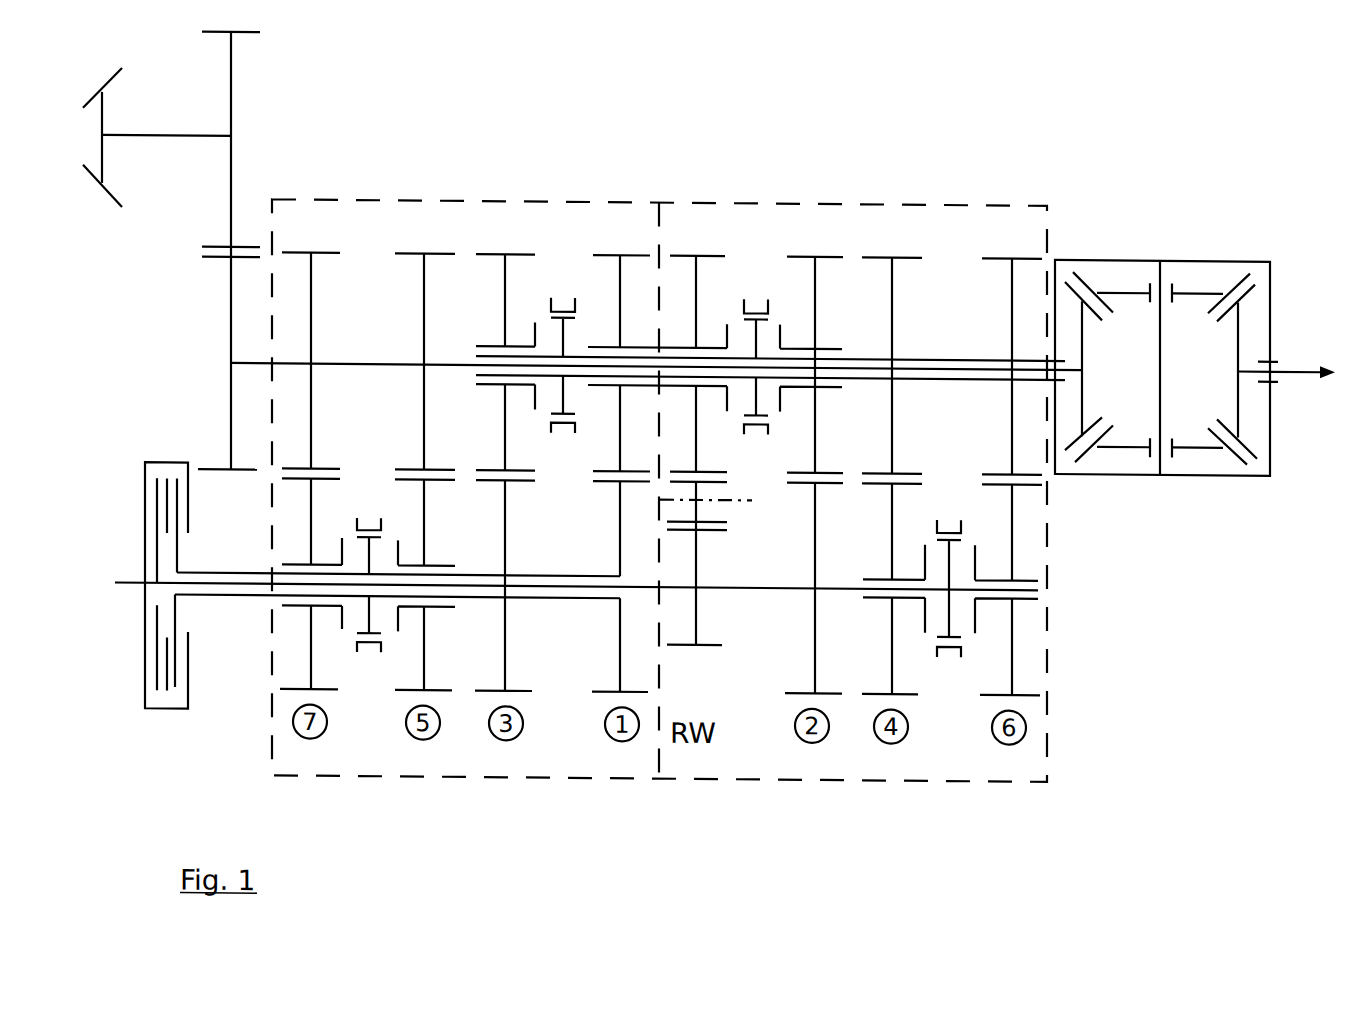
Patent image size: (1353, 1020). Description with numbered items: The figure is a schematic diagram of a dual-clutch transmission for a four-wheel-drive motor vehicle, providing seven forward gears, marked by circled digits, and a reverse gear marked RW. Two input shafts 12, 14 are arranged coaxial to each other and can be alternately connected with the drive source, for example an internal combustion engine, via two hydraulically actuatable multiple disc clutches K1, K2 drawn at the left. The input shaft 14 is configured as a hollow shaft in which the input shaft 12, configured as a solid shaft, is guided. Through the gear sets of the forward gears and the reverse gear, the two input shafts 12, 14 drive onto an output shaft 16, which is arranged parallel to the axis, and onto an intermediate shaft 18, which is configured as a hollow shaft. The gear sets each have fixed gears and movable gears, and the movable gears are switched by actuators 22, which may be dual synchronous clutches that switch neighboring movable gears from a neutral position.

The input shaft 12 is at (770, 584).
The input shaft 14 is at (550, 567).
The output shaft 16 is at (370, 358).
The intermediate shaft 18 is at (938, 349).
The actuator 22 is at (565, 270).
The multiple disc clutch K1 is at (177, 686).
The multiple disc clutch K2 is at (155, 684).